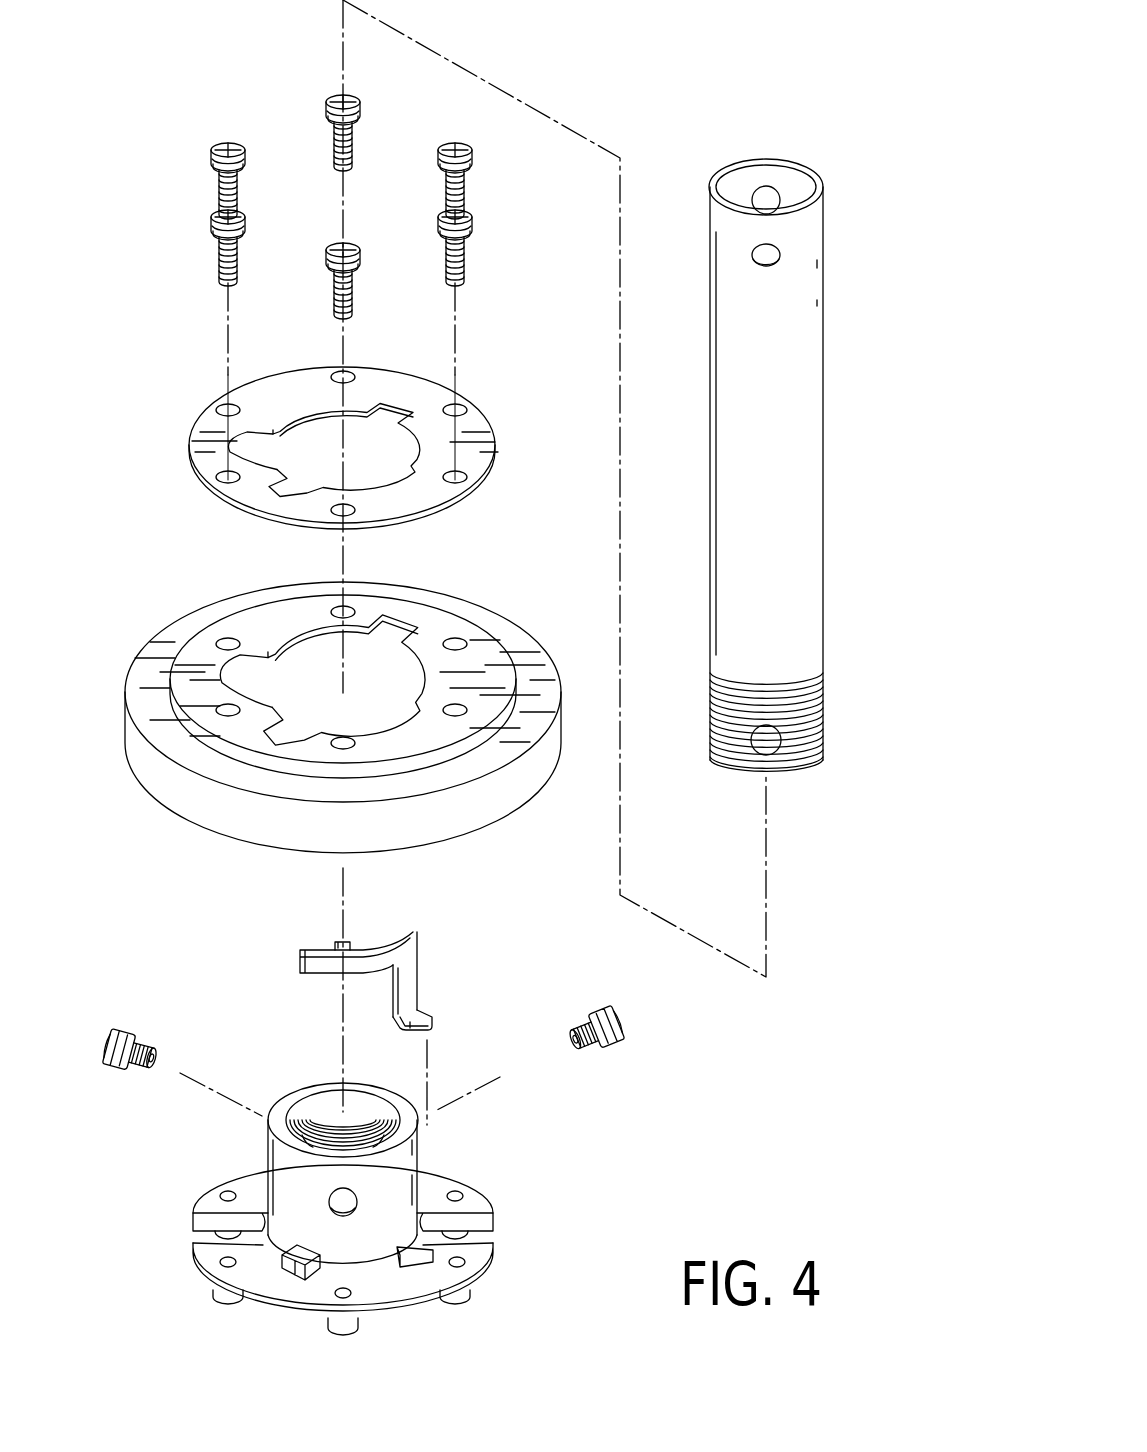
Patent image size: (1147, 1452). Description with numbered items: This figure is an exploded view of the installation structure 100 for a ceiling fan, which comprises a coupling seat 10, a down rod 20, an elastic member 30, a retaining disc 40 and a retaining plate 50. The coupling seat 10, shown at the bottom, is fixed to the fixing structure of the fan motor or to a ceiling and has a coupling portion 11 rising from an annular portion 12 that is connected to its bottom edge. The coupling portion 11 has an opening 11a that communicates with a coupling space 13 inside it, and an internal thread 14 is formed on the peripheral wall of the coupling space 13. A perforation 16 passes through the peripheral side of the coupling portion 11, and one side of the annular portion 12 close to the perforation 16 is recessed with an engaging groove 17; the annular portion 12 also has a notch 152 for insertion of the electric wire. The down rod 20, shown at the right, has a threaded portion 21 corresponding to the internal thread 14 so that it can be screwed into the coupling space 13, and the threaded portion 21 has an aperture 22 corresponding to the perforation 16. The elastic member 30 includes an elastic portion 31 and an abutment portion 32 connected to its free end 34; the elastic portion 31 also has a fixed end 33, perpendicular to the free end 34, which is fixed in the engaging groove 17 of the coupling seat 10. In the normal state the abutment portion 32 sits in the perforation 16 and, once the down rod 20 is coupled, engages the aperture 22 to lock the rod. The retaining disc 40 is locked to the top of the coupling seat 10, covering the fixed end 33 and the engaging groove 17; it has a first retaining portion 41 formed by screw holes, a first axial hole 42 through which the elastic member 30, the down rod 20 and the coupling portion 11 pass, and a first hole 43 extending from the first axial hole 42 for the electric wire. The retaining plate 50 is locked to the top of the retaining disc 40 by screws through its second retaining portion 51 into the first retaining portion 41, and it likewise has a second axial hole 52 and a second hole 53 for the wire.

The installation structure 100 is at (864, 170).
The coupling seat 10 is at (349, 1177).
The coupling portion 11 is at (278, 1156).
The opening 11a is at (292, 1110).
The annular portion 12 is at (242, 1272).
The coupling space 13 is at (356, 1137).
The internal thread 14 is at (330, 1132).
The notch 152 is at (215, 1222).
The perforation 16 is at (346, 1212).
The engaging groove 17 is at (464, 1264).
The down rod 20 is at (828, 392).
The threaded portion 21 is at (802, 695).
The aperture 22 is at (772, 740).
The elastic member 30 is at (371, 954).
The elastic portion 31 is at (412, 980).
The abutment portion 32 is at (333, 945).
The fixed end 33 is at (432, 1022).
The free end 34 is at (380, 960).
The retaining disc 40 is at (535, 634).
The first retaining portion 41 is at (456, 640).
The first axial hole 42 is at (292, 660).
The first hole 43 is at (235, 680).
The retaining plate 50 is at (490, 416).
The second retaining portion 51 is at (462, 478).
The second axial hole 52 is at (326, 430).
The second hole 53 is at (255, 438).